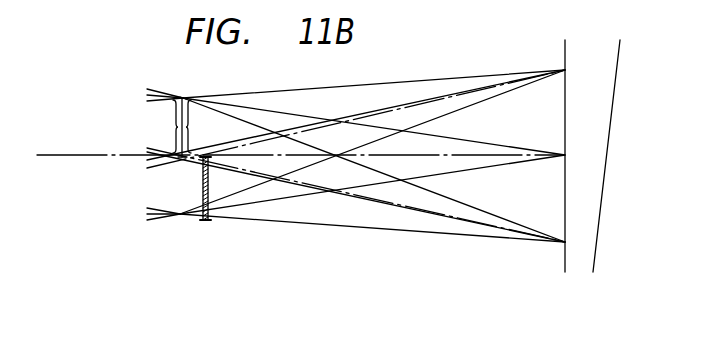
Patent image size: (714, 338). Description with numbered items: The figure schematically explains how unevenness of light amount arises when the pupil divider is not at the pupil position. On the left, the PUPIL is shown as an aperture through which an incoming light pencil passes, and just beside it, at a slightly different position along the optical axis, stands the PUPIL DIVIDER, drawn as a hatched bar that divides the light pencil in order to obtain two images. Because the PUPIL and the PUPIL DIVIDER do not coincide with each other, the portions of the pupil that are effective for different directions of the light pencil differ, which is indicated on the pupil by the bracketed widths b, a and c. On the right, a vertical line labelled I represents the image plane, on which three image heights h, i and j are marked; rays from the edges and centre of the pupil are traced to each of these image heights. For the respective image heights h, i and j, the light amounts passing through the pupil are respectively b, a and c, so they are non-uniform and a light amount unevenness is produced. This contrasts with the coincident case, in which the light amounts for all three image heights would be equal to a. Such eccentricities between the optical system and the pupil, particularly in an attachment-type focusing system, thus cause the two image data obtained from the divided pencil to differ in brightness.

The light amount a is at (162, 127).
The light amount b is at (197, 126).
The light amount c is at (167, 126).
The image height h is at (367, 136).
The image height i is at (379, 156).
The image height j is at (363, 178).
The image plane I is at (565, 40).
The pupil PUPIL is at (180, 251).
The pupil divider PUPIL DIVIDER is at (264, 206).